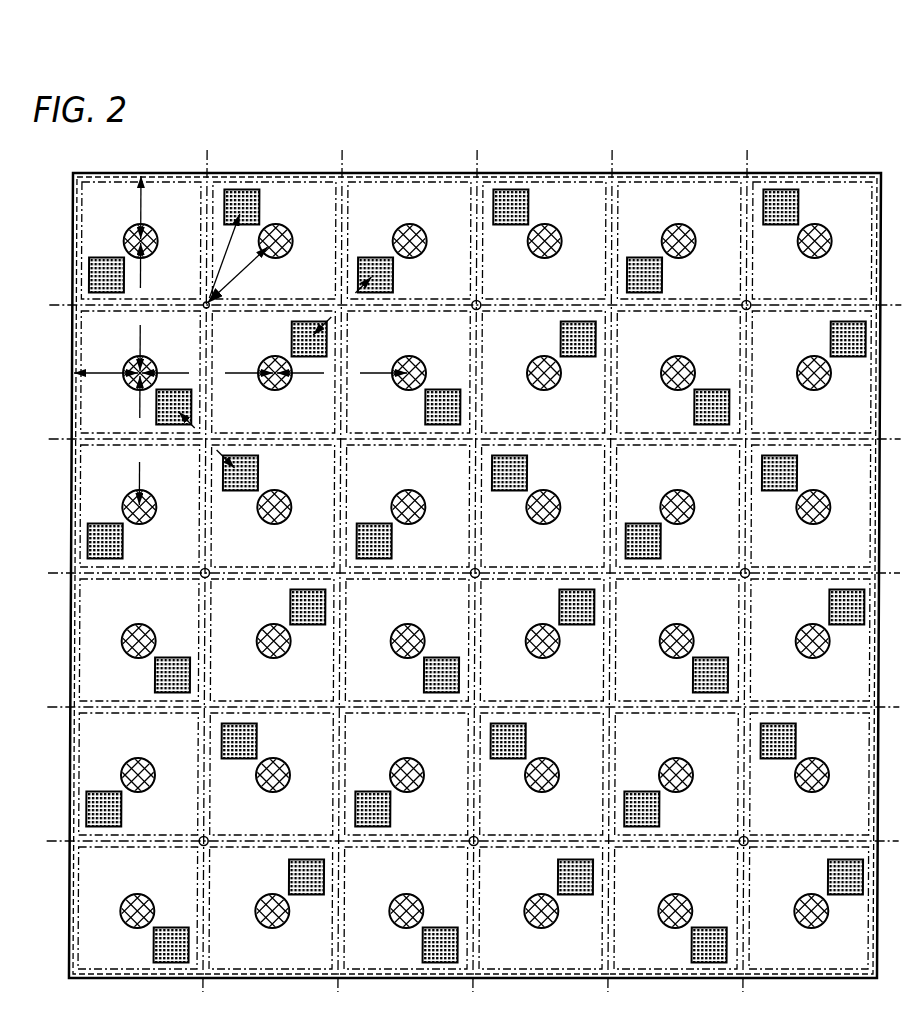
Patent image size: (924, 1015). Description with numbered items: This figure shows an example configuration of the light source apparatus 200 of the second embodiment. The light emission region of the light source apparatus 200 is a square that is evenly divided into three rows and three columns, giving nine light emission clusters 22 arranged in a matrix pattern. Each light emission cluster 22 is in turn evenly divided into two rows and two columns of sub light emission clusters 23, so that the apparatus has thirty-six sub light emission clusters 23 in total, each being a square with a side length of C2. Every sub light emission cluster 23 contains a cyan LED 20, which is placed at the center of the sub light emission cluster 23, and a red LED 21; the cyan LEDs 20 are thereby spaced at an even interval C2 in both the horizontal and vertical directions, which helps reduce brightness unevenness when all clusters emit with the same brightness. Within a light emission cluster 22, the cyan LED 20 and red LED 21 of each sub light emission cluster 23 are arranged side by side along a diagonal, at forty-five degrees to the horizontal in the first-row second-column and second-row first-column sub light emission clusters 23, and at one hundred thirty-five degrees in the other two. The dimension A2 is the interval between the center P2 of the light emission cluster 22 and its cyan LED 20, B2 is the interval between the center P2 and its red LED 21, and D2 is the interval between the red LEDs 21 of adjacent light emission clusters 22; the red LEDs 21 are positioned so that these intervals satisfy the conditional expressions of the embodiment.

The light source apparatus 200 is at (820, 173).
The cyan LED 20 is at (288, 386).
The red LED 21 is at (179, 392).
The light emission cluster 22 is at (163, 173).
The sub light emission cluster 23 is at (268, 173).
The center of the light emission cluster P2 is at (210, 309).
The interval between cluster center and cyan LED A2 is at (237, 273).
The interval between cluster center and red LED B2 is at (222, 256).
The interval of the cyan LEDs C2 is at (104, 376).
The interval of the red LEDs D2 is at (275, 372).